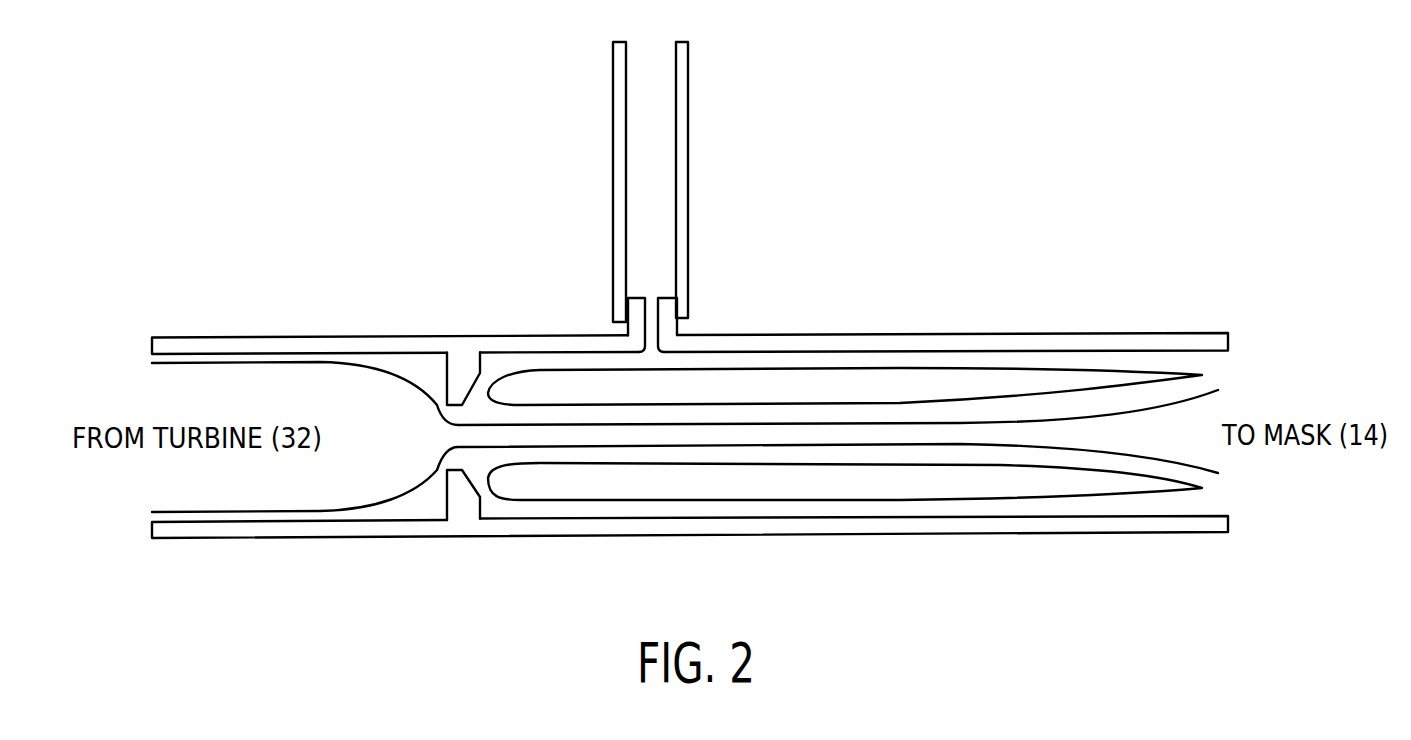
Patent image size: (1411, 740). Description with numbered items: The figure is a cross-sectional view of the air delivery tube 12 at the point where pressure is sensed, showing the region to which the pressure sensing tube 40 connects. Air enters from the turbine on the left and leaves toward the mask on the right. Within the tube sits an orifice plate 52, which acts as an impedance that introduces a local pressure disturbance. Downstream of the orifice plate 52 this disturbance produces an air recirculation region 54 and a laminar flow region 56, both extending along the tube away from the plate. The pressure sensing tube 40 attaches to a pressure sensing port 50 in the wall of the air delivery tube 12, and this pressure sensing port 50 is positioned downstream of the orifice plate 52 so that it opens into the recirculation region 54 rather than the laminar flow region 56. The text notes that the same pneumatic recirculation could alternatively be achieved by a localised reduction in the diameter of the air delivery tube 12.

The air delivery tube 12 is at (690, 324).
The pressure sensing tube 40 is at (683, 98).
The pressure sensing port 50 is at (670, 325).
The orifice plate 52 is at (458, 379).
The air recirculation region 54 is at (955, 483).
The laminar flow region 56 is at (680, 435).